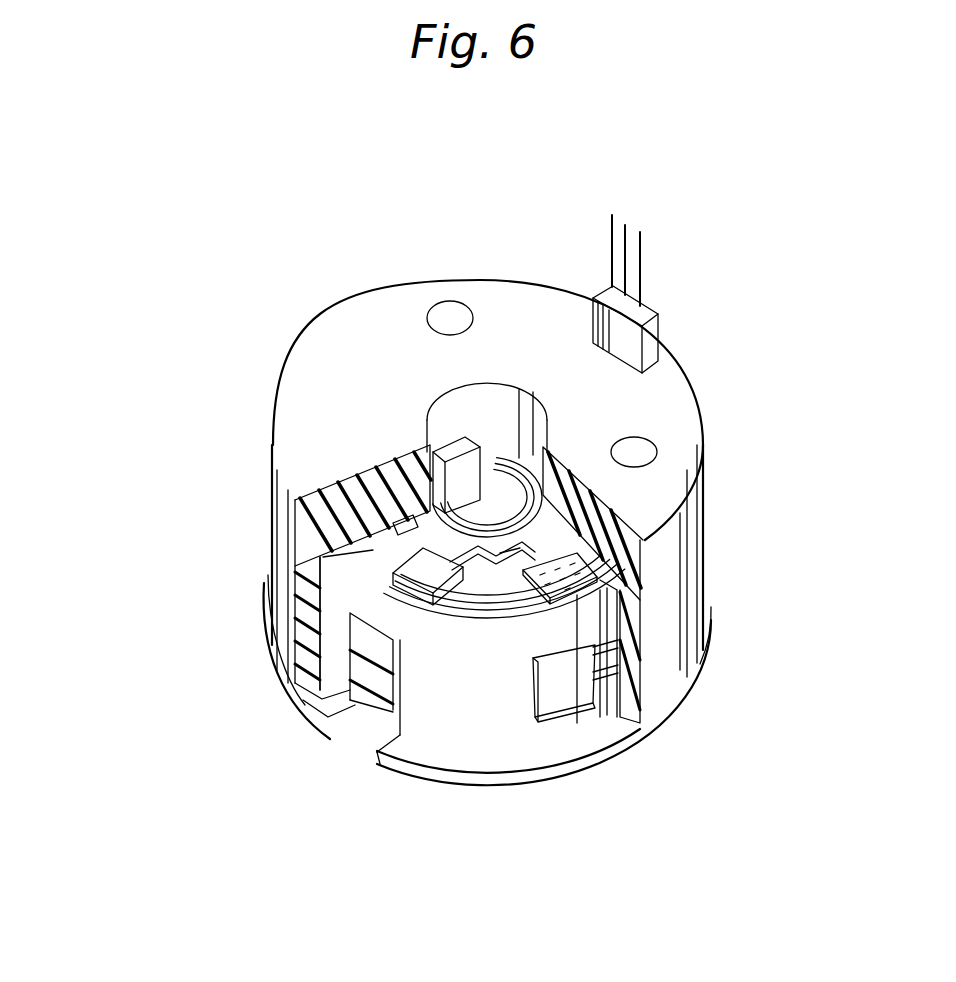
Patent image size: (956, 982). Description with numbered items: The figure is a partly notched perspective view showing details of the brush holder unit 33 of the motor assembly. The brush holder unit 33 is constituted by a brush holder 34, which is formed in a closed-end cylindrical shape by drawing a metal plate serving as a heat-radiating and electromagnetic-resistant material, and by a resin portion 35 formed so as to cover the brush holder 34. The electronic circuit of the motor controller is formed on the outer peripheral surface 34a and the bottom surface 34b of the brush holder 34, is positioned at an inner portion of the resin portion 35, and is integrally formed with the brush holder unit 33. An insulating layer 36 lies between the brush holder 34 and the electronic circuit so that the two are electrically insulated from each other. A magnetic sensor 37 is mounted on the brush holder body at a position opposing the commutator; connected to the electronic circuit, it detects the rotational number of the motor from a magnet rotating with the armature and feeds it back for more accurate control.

The brush holder unit 33 is at (268, 325).
The brush holder 34 is at (412, 700).
The outer peripheral surface 34a is at (508, 700).
The bottom surface 34b is at (370, 577).
The resin portion 35 is at (680, 401).
The insulating layer 36 is at (463, 707).
The magnetic sensor 37 is at (457, 443).